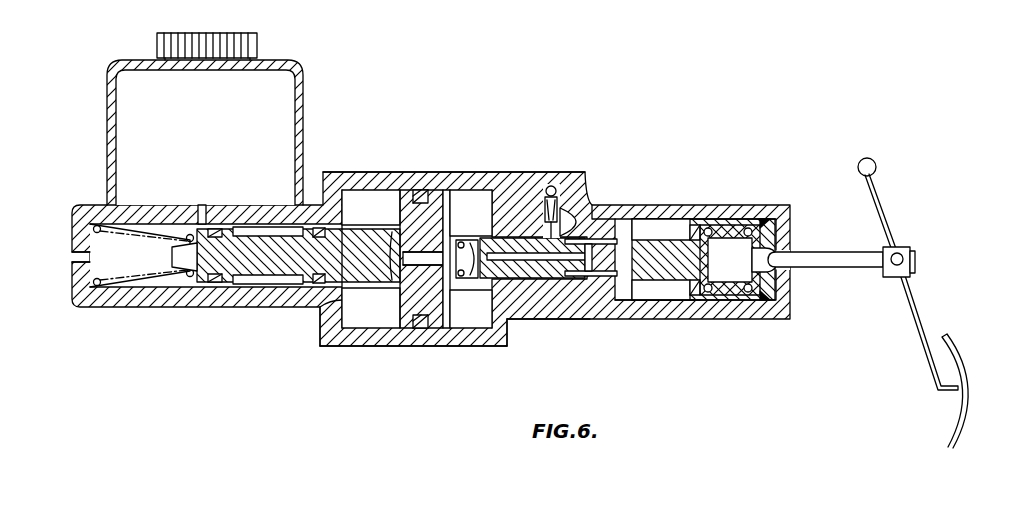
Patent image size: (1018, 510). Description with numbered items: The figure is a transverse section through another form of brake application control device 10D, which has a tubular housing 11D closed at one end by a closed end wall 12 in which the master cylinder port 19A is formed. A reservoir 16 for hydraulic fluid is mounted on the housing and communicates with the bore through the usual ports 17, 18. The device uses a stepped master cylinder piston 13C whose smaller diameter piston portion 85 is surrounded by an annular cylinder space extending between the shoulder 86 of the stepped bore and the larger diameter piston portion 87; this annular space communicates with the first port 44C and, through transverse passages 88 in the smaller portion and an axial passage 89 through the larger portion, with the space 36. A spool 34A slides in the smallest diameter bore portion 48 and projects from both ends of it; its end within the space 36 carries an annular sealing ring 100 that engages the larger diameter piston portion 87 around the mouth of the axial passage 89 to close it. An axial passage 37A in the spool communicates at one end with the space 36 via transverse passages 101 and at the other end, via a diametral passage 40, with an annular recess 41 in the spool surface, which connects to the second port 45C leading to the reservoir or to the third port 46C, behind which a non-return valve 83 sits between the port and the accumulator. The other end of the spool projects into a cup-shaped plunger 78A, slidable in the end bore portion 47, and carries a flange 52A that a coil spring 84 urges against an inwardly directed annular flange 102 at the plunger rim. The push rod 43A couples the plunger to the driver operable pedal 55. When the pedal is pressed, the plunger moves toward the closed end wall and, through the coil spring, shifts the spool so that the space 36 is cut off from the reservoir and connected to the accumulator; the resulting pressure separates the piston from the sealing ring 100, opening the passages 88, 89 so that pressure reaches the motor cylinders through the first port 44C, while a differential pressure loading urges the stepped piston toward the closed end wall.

The brake application control device 10D is at (160, 313).
The tubular housing 11D is at (382, 178).
The closed end wall 12 is at (78, 270).
The stepped master cylinder piston 13C is at (330, 300).
The reservoir 16 is at (130, 120).
The port 17 is at (203, 218).
The port 18 is at (244, 220).
The master cylinder port 19A is at (80, 250).
The spool 34A is at (640, 308).
The space 36 is at (500, 328).
The axial passage 37A is at (545, 290).
The diametral passage 40 is at (582, 288).
The annular recess 41 is at (606, 288).
The push rod 43A is at (828, 258).
The first port 44C is at (352, 342).
The second port 45C is at (640, 218).
The third port 46C is at (585, 212).
The end bore portion 47 is at (660, 298).
The smallest diameter bore portion 48 is at (510, 213).
The flange 52A is at (740, 300).
The pedal 55 is at (962, 368).
The cup-shaped plunger 78A is at (777, 270).
The non-return valve 83 is at (563, 198).
The coil spring 84 is at (745, 228).
The smaller diameter piston portion 85 is at (275, 262).
The shoulder 86 is at (345, 207).
The larger diameter piston portion 87 is at (428, 212).
The transverse passages 88 is at (400, 258).
The axial passage 89 is at (484, 250).
The annular sealing ring 100 is at (470, 325).
The transverse passages 101 is at (478, 248).
The annular flange 102 is at (700, 228).